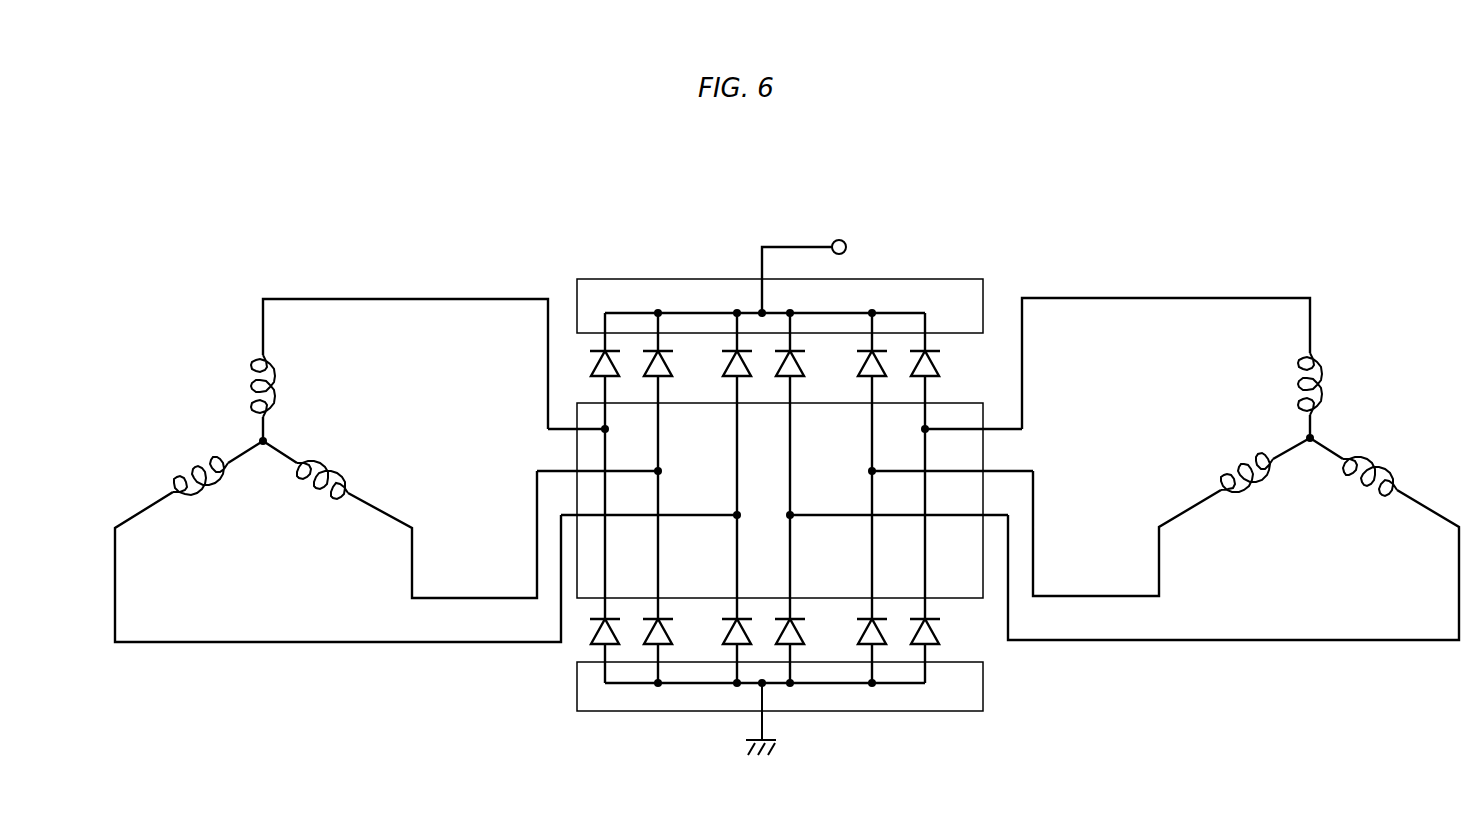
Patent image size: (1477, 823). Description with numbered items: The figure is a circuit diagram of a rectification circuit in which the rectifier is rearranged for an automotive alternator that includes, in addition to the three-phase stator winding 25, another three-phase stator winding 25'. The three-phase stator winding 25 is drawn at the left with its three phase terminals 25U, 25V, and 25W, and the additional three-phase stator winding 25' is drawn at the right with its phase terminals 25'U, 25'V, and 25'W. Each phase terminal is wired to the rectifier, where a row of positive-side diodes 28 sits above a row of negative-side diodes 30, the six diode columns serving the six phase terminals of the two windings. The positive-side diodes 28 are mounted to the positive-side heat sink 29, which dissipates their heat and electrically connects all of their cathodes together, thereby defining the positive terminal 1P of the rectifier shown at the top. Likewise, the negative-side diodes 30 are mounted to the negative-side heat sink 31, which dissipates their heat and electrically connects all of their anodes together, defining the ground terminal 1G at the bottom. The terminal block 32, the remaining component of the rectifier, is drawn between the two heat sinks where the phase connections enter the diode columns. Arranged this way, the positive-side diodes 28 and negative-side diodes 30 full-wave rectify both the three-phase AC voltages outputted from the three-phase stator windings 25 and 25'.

The positive terminal 1P is at (840, 239).
The ground terminal 1G is at (773, 740).
The three-phase stator winding 25 is at (338, 472).
The phase terminal 25U is at (446, 299).
The phase terminal 25V is at (470, 598).
The phase terminal 25W is at (430, 644).
The three-phase stator winding 25' is at (1233, 472).
The phase terminal 25'U is at (1172, 334).
The phase terminal 25'V is at (1171, 517).
The phase terminal 25'W is at (1233, 575).
The positive-side diodes 28 is at (600, 349).
The positive-side heat sink 29 is at (665, 272).
The negative-side diodes 30 is at (664, 617).
The negative-side heat sink 31 is at (698, 720).
The terminal block 32 is at (577, 607).